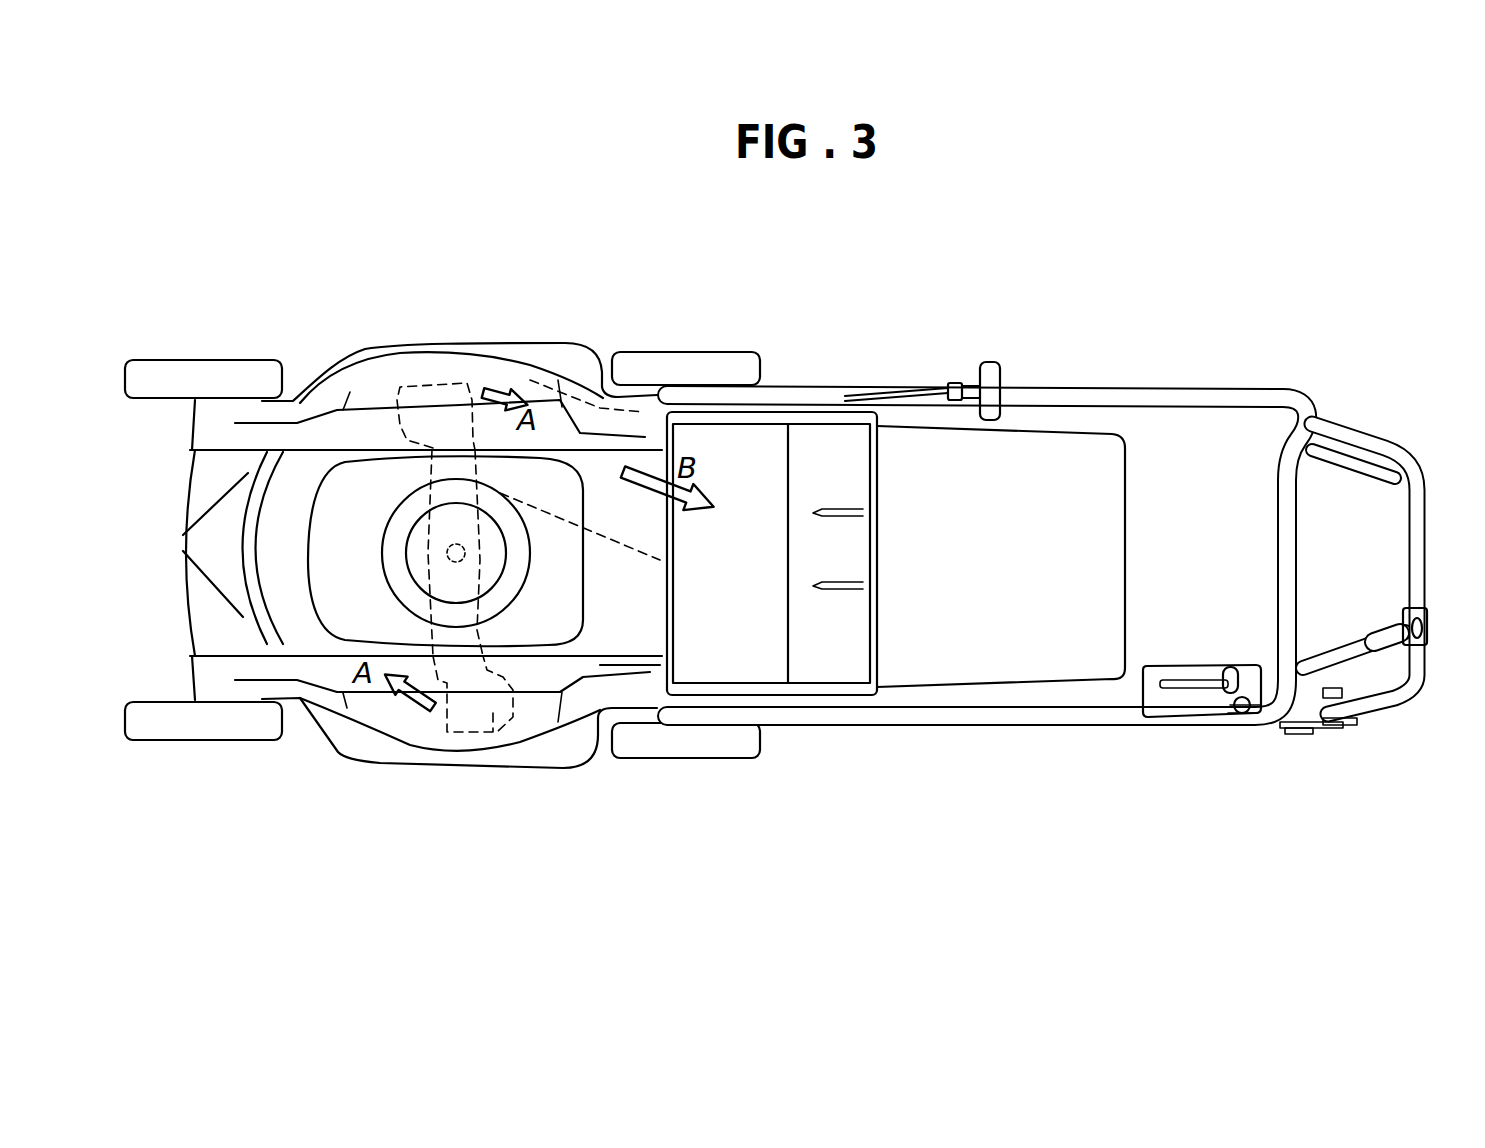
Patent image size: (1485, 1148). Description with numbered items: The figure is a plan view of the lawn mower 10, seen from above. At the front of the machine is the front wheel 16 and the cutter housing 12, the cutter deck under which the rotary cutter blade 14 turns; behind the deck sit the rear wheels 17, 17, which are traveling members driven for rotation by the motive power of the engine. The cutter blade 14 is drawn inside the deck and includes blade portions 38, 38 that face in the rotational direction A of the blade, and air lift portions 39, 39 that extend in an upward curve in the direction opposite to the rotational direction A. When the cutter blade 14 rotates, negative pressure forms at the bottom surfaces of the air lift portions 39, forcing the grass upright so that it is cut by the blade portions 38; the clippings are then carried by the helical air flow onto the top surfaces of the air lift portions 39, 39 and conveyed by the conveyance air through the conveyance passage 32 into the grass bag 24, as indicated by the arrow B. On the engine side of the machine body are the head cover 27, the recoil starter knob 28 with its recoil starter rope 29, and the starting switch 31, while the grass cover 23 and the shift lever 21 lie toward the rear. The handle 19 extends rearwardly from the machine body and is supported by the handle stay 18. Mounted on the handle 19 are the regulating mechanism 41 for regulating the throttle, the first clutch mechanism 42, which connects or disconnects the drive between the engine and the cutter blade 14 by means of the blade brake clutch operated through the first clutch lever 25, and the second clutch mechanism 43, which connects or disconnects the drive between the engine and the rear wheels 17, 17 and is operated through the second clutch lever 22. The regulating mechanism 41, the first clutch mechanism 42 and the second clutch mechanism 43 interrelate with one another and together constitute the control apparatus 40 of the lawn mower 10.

The lawn mower 10 is at (293, 140).
The cutter housing 12 is at (530, 768).
The rotary cutter blade 14 is at (399, 385).
The front wheel 16 is at (208, 350).
The rear wheels 17 is at (663, 350).
The handle stay 18 is at (712, 407).
The handle 19 is at (1137, 383).
The shift lever 21 is at (1230, 667).
The second clutch lever 22 is at (1320, 443).
The grass cover 23 is at (757, 440).
The grass bag 24 is at (1033, 437).
The first clutch lever 25 is at (1376, 424).
The head cover 27 is at (347, 472).
The recoil starter knob 28 is at (969, 375).
The recoil starter rope 29 is at (887, 392).
The starting switch 31 is at (1240, 714).
The conveyance passage 32 is at (635, 407).
The blade portions 38 is at (467, 397).
The air lift portions 39 is at (427, 397).
The control apparatus 40 is at (1296, 757).
The regulating mechanism 41 is at (1278, 737).
The first clutch mechanism 42 is at (1392, 362).
The second clutch mechanism 43 is at (1311, 380).